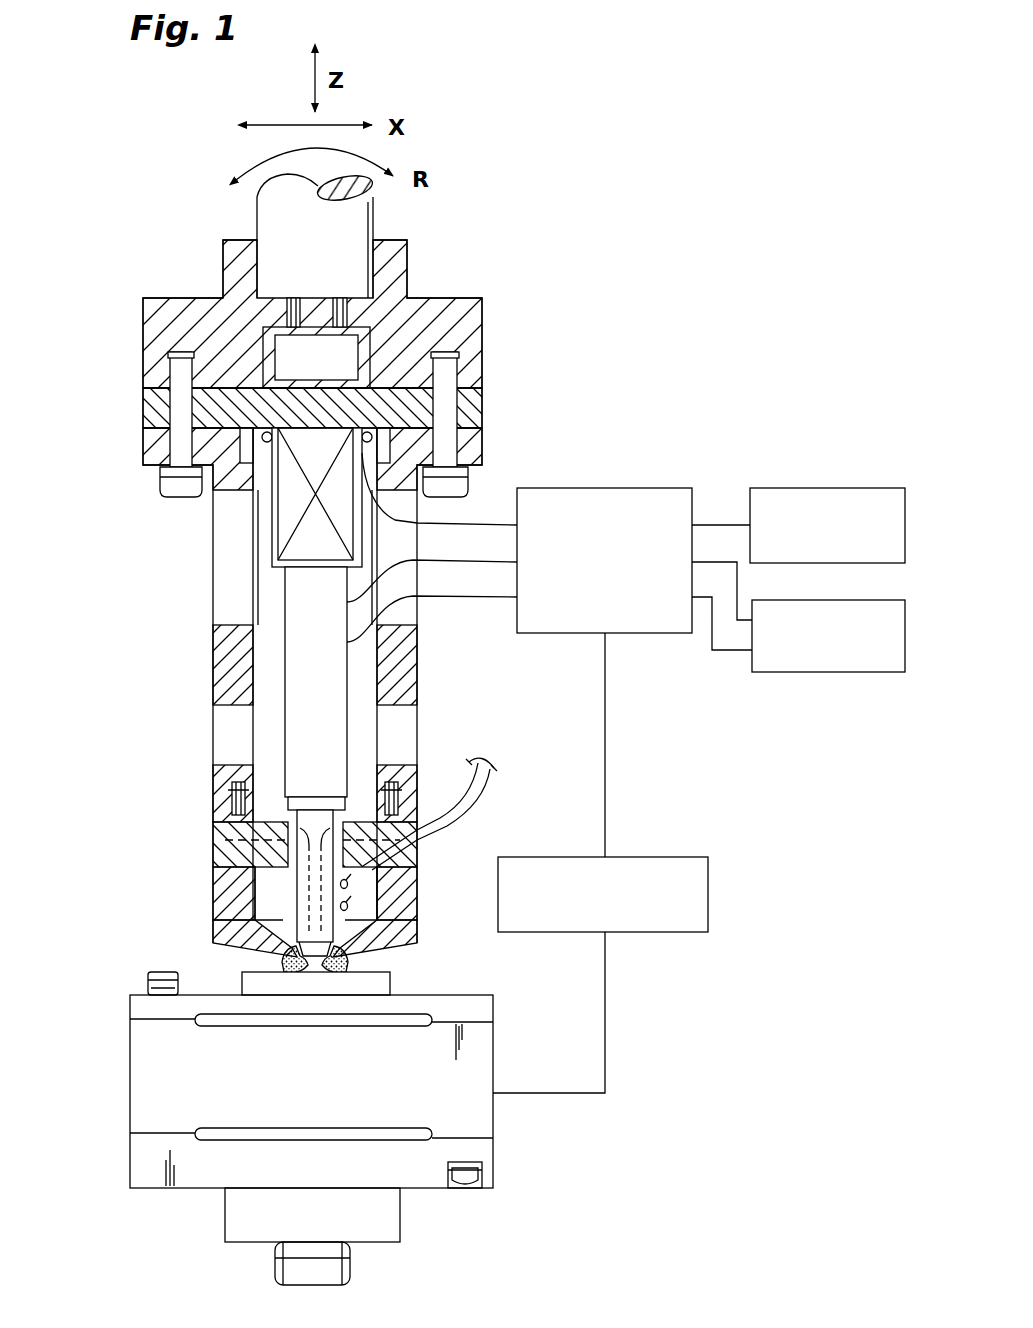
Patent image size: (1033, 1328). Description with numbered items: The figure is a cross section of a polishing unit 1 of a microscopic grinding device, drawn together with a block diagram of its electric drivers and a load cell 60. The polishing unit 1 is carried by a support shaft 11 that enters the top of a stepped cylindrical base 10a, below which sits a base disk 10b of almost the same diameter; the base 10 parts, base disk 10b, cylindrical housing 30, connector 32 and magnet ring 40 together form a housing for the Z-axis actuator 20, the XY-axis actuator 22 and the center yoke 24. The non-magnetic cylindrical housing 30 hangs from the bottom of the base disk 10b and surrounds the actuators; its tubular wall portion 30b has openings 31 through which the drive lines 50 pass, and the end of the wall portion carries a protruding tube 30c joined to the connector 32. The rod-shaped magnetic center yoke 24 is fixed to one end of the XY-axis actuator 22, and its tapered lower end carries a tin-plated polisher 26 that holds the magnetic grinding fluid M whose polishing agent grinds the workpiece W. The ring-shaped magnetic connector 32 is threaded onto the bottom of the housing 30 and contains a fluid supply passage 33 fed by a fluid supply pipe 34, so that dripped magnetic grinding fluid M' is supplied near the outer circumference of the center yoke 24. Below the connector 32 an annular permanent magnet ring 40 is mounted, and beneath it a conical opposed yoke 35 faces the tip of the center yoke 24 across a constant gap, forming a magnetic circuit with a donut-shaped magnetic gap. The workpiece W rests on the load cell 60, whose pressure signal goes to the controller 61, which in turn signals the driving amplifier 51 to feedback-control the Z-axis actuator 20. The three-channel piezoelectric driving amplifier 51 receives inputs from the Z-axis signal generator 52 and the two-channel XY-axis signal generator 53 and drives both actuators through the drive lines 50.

The polishing unit 1 is at (135, 386).
The base 10 is at (490, 343).
The stepped cylindrical base 10a is at (168, 315).
The base disk 10b is at (153, 406).
The support shaft 11 is at (280, 227).
The Z-axis actuator 20 is at (292, 503).
The XY-axis actuator 22 is at (302, 733).
The center yoke 24 is at (307, 827).
The polisher 26 is at (340, 975).
The cylindrical housing 30 is at (153, 450).
The tubular wall portion 30b is at (213, 652).
The protruding tube 30c is at (220, 792).
The openings 31 is at (403, 603).
The connector 32 is at (422, 785).
The fluid supply passage 33 is at (418, 852).
The fluid supply pipe 34 is at (492, 768).
The opposed yoke 35 is at (213, 923).
The magnet ring 40 is at (418, 892).
The drive lines 50 is at (497, 596).
The driving amplifier 51 is at (626, 488).
The Z-axis signal generator 52 is at (812, 488).
The XY-axis signal generator 53 is at (798, 672).
The load cell 60 is at (158, 1070).
The controller 61 is at (657, 857).
The magnetic grinding fluid M is at (421, 966).
The dripped magnetic grinding fluid M' is at (409, 899).
The workpiece W is at (240, 972).